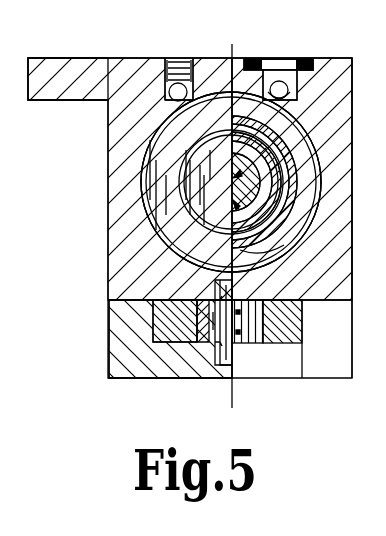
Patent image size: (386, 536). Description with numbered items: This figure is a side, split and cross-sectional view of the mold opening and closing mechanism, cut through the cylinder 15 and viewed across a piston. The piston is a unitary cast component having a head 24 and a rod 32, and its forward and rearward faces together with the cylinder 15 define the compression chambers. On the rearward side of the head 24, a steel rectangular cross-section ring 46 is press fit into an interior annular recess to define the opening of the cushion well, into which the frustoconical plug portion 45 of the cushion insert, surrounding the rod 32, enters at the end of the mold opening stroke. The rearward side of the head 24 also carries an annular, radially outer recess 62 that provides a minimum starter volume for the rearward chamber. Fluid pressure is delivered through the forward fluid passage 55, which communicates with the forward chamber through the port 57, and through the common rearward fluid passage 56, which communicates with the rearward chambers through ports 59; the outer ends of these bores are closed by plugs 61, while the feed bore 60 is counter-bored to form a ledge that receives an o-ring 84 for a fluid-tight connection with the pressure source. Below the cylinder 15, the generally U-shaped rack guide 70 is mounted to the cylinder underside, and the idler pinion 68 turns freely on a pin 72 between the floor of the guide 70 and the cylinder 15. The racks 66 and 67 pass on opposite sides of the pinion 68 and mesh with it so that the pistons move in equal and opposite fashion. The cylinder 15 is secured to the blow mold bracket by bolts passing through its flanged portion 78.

The cylinder 15 is at (353, 90).
The piston head 24 is at (145, 168).
The rod 32 is at (282, 208).
The plug portion 45 is at (292, 184).
The ring 46 is at (278, 228).
The forward fluid passage 55 is at (196, 72).
The rearward fluid passage 56 is at (276, 82).
The port 57 is at (168, 92).
The ports 59 is at (288, 98).
The feed bore 60 is at (284, 64).
The plugs 61 is at (172, 62).
The recess 62 is at (270, 252).
The rack 66 is at (172, 345).
The rack 67 is at (298, 345).
The idler pinion 68 is at (252, 345).
The rack guide 70 is at (110, 334).
The pin 72 is at (218, 352).
The flanged portion 78 is at (78, 57).
The o-rings 84 is at (308, 62).